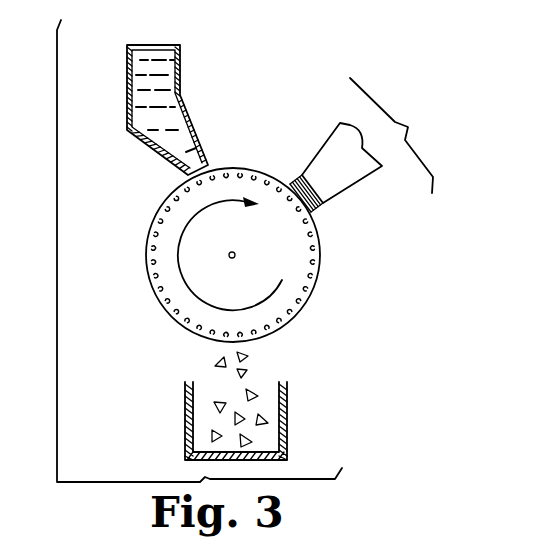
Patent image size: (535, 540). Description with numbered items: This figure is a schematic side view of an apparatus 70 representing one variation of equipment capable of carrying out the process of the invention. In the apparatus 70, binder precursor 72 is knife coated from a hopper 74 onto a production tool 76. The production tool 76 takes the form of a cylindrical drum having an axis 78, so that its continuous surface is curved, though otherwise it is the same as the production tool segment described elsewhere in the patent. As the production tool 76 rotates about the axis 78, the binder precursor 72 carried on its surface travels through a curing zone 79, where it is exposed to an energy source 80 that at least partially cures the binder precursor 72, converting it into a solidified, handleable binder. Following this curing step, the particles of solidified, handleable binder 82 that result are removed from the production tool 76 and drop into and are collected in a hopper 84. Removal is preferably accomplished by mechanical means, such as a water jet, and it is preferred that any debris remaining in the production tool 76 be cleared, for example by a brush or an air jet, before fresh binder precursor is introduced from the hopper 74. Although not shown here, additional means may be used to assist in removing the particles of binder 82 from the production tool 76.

The apparatus 70 is at (245, 54).
The binder precursor 72 is at (152, 57).
The hopper 74 is at (127, 63).
The production tool 76 is at (320, 294).
The axis 78 is at (235, 255).
The curing zone 79 is at (397, 135).
The energy source 80 is at (357, 168).
The particles of solidified, handleable binder 82 is at (247, 372).
The hopper 84 is at (287, 418).